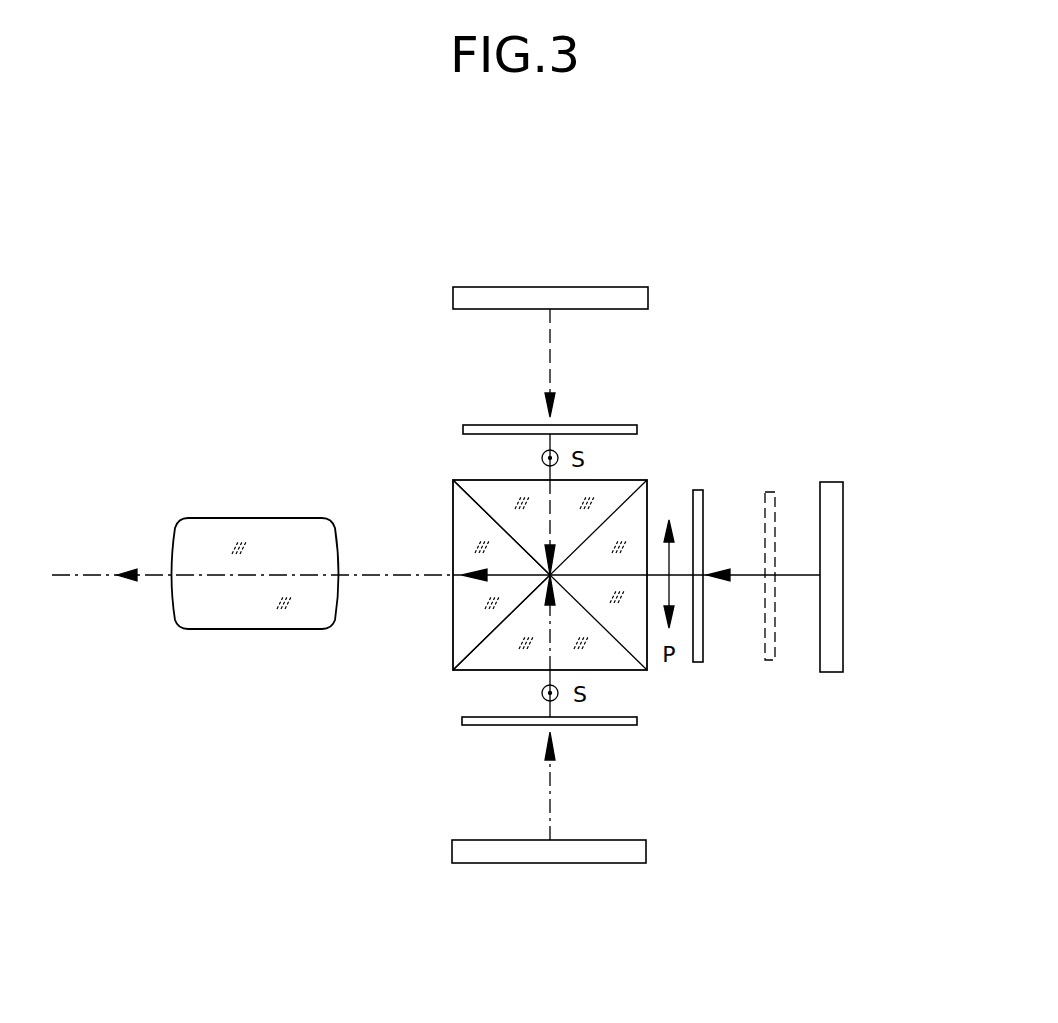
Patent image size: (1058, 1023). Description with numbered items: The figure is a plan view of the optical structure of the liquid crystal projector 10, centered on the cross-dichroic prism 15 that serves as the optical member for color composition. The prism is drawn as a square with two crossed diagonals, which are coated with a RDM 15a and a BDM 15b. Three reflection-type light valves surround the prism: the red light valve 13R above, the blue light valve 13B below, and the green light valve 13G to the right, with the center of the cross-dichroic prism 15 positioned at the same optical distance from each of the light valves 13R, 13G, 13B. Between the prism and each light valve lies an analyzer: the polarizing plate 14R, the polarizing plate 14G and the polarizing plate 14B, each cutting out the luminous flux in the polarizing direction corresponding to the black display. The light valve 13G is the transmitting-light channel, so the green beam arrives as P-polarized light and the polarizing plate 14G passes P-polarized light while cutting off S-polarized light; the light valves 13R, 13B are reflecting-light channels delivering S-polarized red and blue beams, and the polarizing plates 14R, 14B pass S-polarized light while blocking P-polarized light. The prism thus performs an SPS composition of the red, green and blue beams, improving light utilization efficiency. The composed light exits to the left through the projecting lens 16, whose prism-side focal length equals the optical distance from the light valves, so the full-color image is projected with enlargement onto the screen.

The liquid crystal projector 10 is at (322, 245).
The red light valve 13R is at (648, 299).
The green light valve 13G is at (843, 535).
The blue light valve 13B is at (452, 853).
The red polarizing plate 14R is at (598, 424).
The green polarizing plate 14G is at (705, 495).
The blue polarizing plate 14B is at (612, 727).
The cross-dichroic prism 15 is at (630, 470).
The RDM 15a is at (490, 630).
The BDM 15b is at (483, 511).
The projecting lens 16 is at (253, 518).